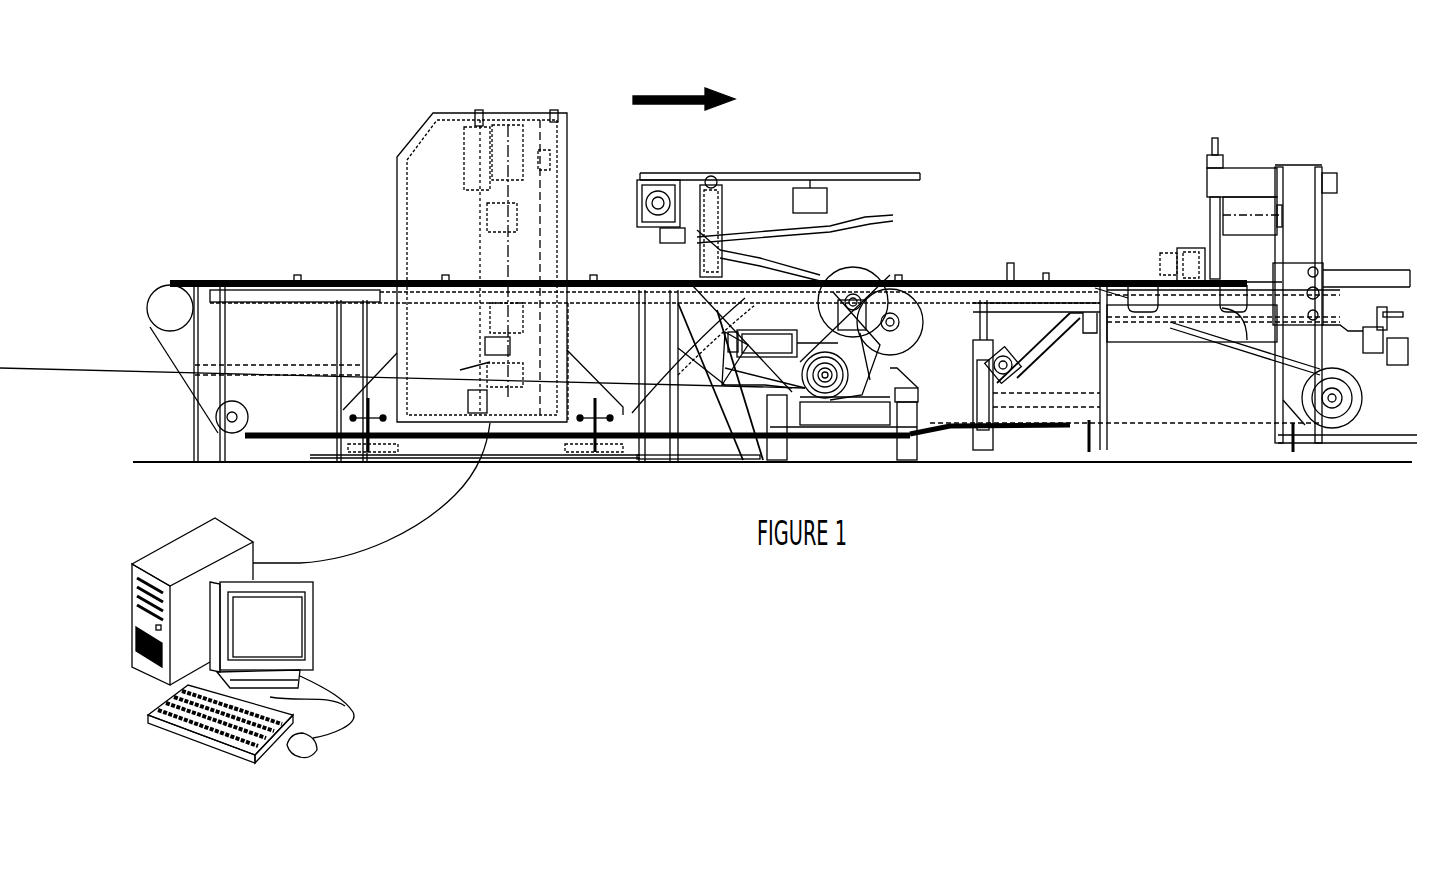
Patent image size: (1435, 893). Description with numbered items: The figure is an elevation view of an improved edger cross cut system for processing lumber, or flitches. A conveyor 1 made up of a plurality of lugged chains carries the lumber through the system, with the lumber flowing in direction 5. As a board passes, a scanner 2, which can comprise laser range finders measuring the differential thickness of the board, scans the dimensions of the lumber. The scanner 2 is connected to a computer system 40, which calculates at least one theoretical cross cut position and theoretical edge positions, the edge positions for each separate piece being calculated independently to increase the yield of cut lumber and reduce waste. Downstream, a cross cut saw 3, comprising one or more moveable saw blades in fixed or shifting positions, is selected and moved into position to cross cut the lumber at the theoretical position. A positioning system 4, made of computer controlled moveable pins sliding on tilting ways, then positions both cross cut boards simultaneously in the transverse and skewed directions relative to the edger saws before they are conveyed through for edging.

The conveyor 1 is at (342, 282).
The scanner 2 is at (533, 113).
The cross cut saw 3 is at (878, 277).
The positioning system 4 is at (1178, 250).
The direction 5 is at (672, 95).
The computer system 40 is at (172, 542).